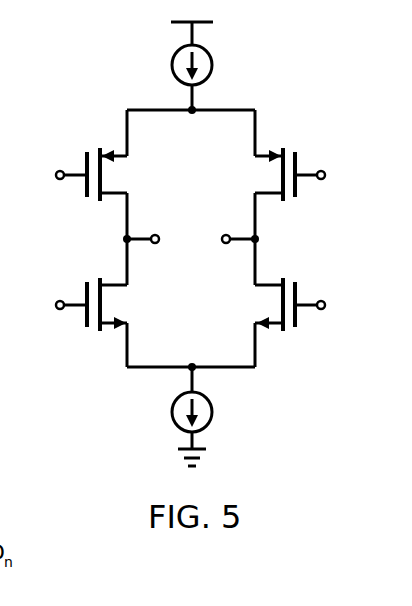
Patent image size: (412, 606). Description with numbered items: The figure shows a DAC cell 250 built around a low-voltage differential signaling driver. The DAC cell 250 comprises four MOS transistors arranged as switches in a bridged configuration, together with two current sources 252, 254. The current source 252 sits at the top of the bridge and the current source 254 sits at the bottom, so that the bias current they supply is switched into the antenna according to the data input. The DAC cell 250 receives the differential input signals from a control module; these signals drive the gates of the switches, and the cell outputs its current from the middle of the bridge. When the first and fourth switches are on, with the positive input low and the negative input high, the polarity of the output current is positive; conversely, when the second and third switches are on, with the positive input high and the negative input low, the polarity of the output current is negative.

The DAC cell 250 is at (212, 199).
The current source 252 is at (172, 65).
The current source 254 is at (172, 412).